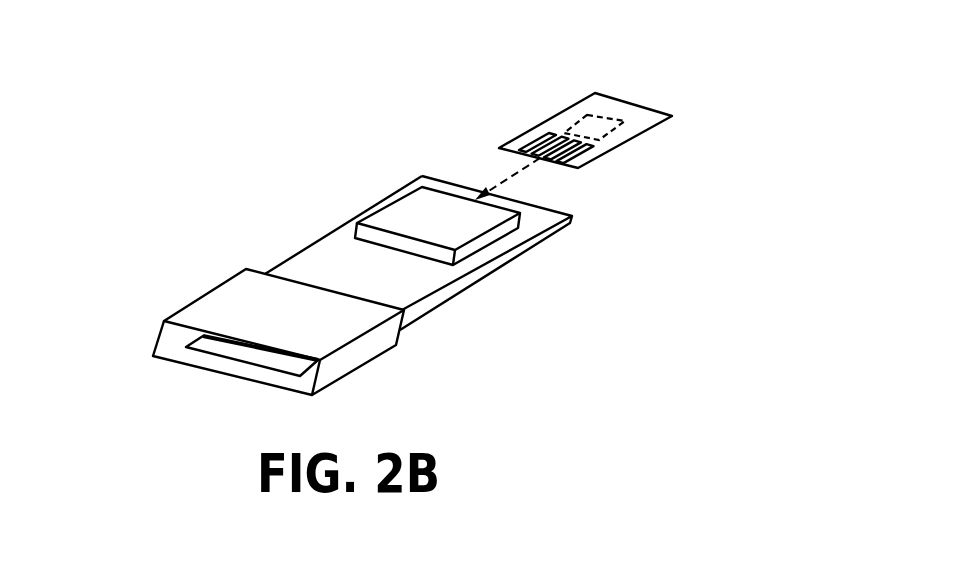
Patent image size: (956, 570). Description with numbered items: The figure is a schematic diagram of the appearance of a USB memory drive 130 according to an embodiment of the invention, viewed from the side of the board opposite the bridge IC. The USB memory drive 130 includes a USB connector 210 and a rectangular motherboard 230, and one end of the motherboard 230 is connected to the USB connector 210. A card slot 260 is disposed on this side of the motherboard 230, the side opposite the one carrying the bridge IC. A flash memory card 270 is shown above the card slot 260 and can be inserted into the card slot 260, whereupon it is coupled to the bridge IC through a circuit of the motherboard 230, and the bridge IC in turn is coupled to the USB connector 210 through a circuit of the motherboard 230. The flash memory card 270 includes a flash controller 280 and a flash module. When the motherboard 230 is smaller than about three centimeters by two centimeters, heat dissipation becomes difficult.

The USB memory drive 130 is at (432, 78).
The USB connector 210 is at (158, 338).
The motherboard 230 is at (503, 265).
The card slot 260 is at (355, 230).
The flash memory card 270 is at (633, 102).
The flash controller 280 is at (577, 115).